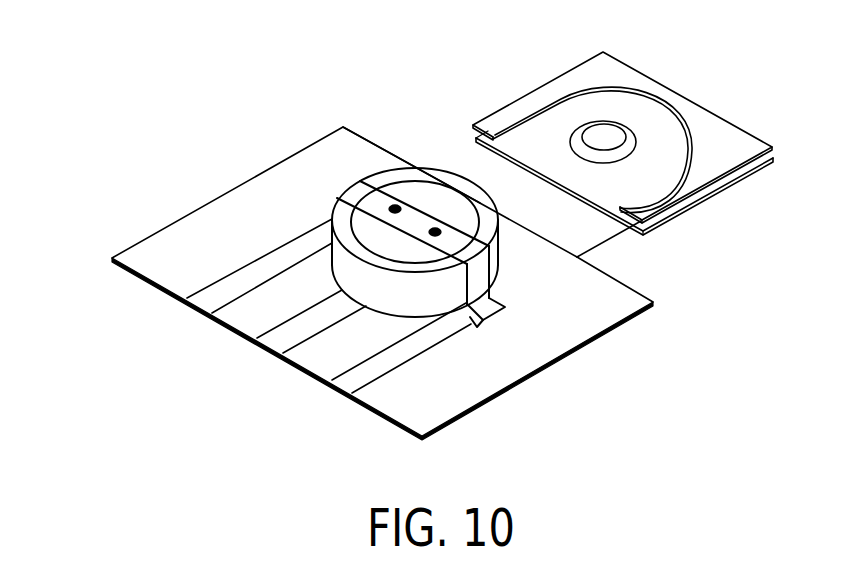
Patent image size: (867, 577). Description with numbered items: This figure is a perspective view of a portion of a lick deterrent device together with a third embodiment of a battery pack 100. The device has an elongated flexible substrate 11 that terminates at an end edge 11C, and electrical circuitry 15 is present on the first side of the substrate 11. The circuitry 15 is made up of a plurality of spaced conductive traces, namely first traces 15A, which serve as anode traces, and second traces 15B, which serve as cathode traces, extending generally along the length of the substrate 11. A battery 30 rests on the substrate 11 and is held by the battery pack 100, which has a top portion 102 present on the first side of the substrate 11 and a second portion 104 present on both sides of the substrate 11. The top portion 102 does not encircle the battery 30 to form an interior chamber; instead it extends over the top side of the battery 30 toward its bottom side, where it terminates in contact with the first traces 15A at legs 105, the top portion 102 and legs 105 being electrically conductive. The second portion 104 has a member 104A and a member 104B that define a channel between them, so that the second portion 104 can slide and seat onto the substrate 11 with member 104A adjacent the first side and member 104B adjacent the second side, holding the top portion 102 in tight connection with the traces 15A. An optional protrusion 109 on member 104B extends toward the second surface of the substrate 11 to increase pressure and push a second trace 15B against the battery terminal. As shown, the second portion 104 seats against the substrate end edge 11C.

The elongated flexible substrate 11 is at (147, 238).
The end edge 11C is at (375, 146).
The electrical circuitry 15 is at (210, 284).
The first traces 15A is at (243, 297).
The second traces 15B is at (313, 333).
The battery 30 is at (336, 198).
The battery pack 100 is at (352, 171).
The top portion 102 is at (498, 255).
The second portion 104 is at (656, 161).
The member 104A is at (622, 62).
The member 104B is at (660, 234).
The legs 105 is at (462, 322).
The protrusion 109 is at (638, 133).